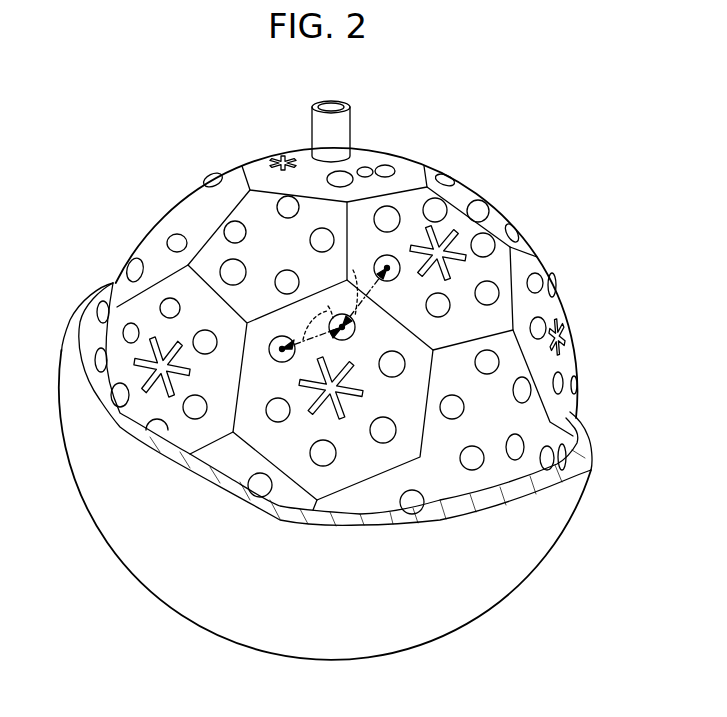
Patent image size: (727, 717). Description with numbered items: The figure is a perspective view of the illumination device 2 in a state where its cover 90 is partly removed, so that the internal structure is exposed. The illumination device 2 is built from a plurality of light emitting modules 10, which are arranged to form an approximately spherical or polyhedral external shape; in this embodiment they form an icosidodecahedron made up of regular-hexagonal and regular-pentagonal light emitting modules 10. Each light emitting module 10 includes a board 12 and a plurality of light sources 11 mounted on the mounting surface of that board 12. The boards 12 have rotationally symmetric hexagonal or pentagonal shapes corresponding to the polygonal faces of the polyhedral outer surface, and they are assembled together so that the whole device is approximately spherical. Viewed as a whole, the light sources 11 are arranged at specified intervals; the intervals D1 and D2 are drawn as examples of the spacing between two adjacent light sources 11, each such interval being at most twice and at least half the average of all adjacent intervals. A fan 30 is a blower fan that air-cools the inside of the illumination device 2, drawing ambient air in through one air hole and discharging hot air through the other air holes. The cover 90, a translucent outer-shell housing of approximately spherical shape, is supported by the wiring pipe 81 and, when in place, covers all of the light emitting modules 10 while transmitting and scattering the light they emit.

The illumination device 2 is at (547, 247).
The light emitting module 10 is at (499, 461).
The light source 11 is at (397, 413).
The board 12 is at (377, 320).
The fan 30 is at (447, 238).
The wiring pipe 81 is at (342, 132).
The cover 90 is at (586, 501).
The interval between two adjacent light sources D1 is at (258, 319).
The interval between two adjacent light sources D2 is at (345, 283).